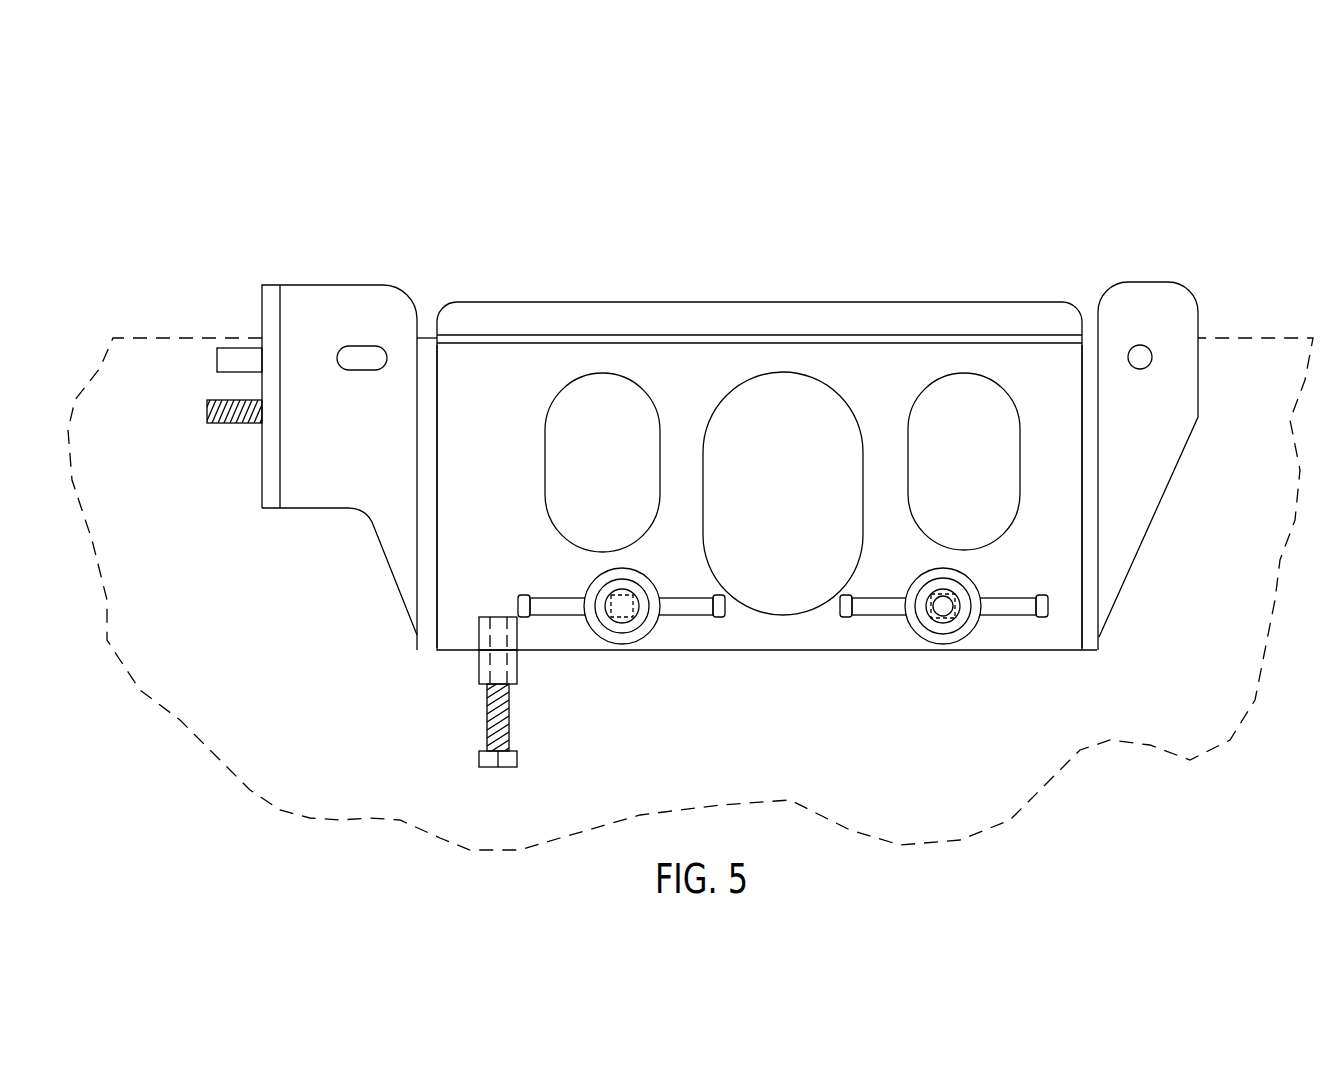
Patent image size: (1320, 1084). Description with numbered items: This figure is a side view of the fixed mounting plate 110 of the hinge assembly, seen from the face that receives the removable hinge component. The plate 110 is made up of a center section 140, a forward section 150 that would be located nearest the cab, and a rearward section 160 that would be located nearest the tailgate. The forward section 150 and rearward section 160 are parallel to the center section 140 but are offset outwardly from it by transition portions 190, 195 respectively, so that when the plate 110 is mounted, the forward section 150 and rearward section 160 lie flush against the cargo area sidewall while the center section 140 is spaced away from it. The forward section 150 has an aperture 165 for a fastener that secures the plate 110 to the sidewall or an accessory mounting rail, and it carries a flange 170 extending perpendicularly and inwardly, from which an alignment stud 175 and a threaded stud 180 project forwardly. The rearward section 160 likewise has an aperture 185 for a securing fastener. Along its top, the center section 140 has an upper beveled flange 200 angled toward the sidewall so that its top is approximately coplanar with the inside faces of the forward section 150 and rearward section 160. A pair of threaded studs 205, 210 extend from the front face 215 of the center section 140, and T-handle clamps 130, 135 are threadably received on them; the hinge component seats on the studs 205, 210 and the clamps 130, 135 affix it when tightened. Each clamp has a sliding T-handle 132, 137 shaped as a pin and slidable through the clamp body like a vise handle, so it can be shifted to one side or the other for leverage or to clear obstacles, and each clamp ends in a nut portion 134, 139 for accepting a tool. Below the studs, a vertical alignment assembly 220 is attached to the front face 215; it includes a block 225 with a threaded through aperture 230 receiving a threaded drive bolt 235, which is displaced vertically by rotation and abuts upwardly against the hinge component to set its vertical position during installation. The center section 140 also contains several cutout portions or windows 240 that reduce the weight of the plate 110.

The fixed mounting plate 110 is at (1136, 187).
The T-handle clamp 130 is at (613, 643).
The sliding T-handle 132 is at (553, 607).
The nut portion 134 is at (628, 610).
The T-handle clamp 135 is at (950, 640).
The sliding T-handle 137 is at (1025, 608).
The nut portion 139 is at (953, 625).
The center section 140 is at (683, 365).
The forward section 150 is at (325, 300).
The rearward section 160 is at (1140, 305).
The aperture 165 is at (365, 348).
The flange 170 is at (267, 293).
The alignment stud 175 is at (233, 358).
The threaded stud 180 is at (207, 425).
The aperture 185 is at (1140, 357).
The transition portion 190 is at (430, 403).
The transition portion 195 is at (1092, 582).
The upper beveled flange 200 is at (607, 313).
The threaded stud 205 is at (615, 622).
The threaded stud 210 is at (955, 618).
The front face 215 is at (886, 370).
The vertical alignment assembly 220 is at (478, 667).
The block 225 is at (477, 627).
The threaded through aperture 230 is at (508, 670).
The threaded drive bolt 235 is at (502, 713).
The cutout portions or windows 240 is at (600, 471).